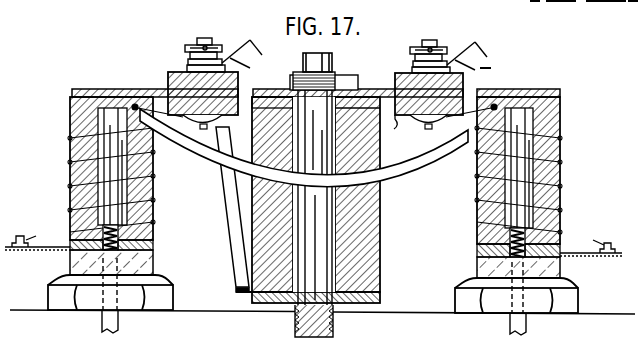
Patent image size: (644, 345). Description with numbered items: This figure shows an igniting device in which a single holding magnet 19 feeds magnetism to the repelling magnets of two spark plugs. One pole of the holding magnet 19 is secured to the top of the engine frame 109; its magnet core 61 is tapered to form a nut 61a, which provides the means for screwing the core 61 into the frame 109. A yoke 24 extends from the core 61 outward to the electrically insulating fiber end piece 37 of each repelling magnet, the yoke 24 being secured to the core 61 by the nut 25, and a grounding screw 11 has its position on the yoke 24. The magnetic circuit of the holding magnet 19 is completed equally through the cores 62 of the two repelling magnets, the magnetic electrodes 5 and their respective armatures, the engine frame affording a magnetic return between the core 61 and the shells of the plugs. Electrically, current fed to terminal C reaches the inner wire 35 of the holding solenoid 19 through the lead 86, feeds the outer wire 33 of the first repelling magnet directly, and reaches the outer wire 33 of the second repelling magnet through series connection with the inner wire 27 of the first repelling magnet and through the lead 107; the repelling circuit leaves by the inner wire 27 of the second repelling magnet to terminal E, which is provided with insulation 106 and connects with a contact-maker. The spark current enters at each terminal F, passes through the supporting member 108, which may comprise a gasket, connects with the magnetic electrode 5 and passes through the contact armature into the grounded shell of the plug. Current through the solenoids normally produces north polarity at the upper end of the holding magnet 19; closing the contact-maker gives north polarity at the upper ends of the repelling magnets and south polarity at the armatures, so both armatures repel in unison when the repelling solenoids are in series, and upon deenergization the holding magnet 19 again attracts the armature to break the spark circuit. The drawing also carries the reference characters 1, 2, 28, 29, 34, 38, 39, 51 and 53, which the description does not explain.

The hex nut 1 is at (313, 294).
The base block 2 is at (147, 266).
The magnetic electrode 5 is at (314, 296).
The grounding screw 11 is at (372, 93).
The holding magnet 19 is at (272, 194).
The yoke 24 is at (106, 90).
The nut 25 is at (358, 80).
The inner wire of repelling magnet 27 is at (132, 106).
The spring 28 is at (140, 229).
The central body right portion 29 is at (357, 194).
The outer wire of repelling magnet 33 is at (70, 128).
The clip 34 is at (405, 127).
The inner wire of holding solenoid 35 is at (247, 293).
The electrically insulating fiber end piece 37 is at (70, 104).
The insulating layer 38 is at (150, 244).
The terminal block 39 is at (216, 83).
The top layer of central body 51 is at (316, 104).
The bottom plate 53 is at (380, 300).
The magnet core 61 is at (314, 213).
The nut 61a is at (332, 66).
The core of repelling magnet 62 is at (575, 187).
The lead 86 is at (236, 265).
The insulation 106 is at (443, 84).
The lead 107 is at (304, 148).
The supporting member 108 is at (63, 251).
The engine frame 109 is at (426, 315).